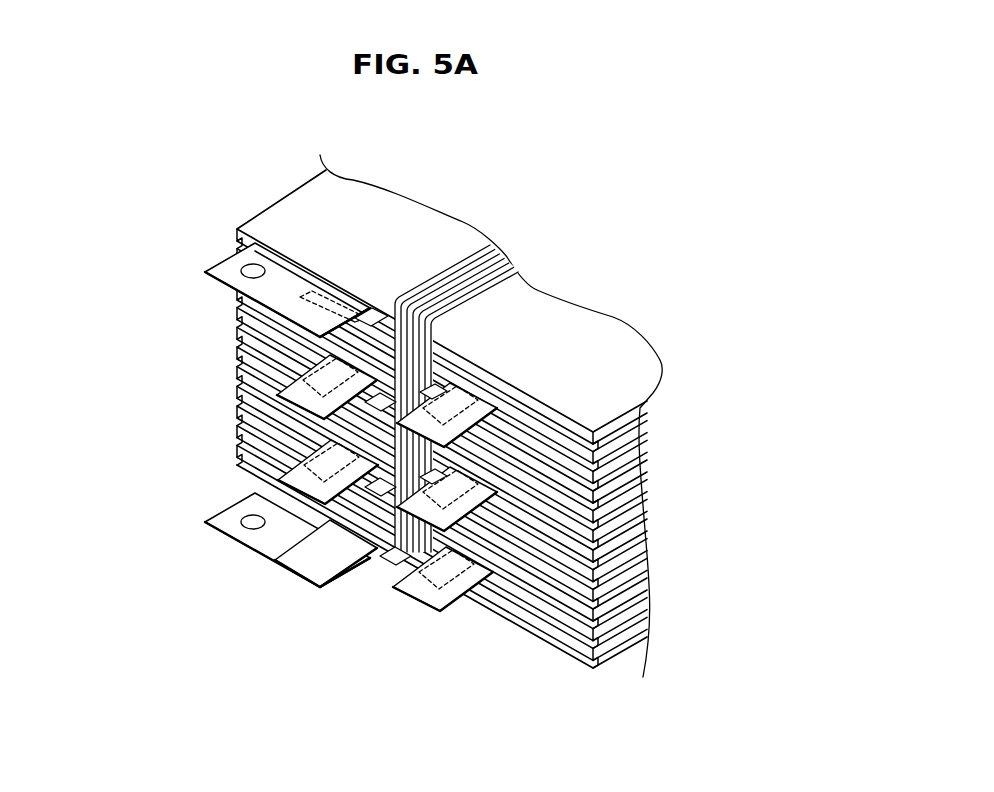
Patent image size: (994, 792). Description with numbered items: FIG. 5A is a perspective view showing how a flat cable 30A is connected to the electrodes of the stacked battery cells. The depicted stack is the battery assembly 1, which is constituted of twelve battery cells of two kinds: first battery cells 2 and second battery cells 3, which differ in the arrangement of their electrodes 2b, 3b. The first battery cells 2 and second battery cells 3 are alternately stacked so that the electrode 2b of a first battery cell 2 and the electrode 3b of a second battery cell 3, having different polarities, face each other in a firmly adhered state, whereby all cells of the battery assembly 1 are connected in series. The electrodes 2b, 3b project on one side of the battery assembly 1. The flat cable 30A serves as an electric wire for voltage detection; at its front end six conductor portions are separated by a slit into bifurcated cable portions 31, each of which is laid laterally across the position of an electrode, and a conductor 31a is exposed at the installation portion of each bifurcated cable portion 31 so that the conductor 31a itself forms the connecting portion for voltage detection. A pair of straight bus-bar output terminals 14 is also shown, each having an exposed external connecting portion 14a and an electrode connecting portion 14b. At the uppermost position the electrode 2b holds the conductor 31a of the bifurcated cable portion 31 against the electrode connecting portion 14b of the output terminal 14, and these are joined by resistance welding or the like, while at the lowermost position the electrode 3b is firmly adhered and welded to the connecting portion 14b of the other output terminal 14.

The battery assembly 1 is at (589, 690).
The first battery cell 2 is at (637, 418).
The second battery cell 3 is at (638, 435).
The electrode 2b is at (305, 307).
The electrode 3b is at (387, 404).
The output terminal 14 is at (205, 287).
The external connecting portion 14a is at (228, 268).
The electrode connecting portion 14b is at (322, 321).
The flat cable 30A is at (462, 262).
The bifurcated cable portion 31 is at (445, 358).
The conductor 31a is at (333, 291).